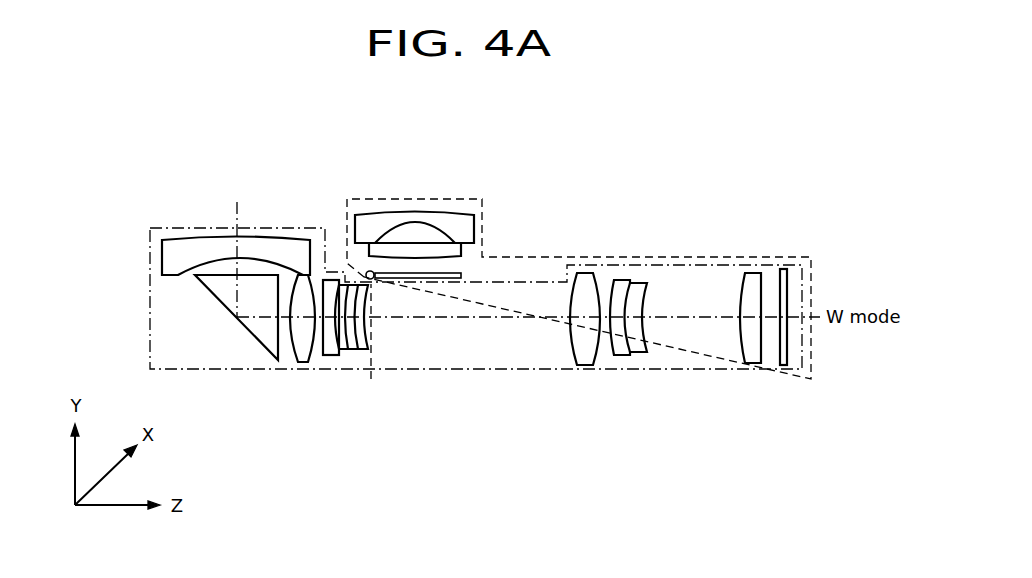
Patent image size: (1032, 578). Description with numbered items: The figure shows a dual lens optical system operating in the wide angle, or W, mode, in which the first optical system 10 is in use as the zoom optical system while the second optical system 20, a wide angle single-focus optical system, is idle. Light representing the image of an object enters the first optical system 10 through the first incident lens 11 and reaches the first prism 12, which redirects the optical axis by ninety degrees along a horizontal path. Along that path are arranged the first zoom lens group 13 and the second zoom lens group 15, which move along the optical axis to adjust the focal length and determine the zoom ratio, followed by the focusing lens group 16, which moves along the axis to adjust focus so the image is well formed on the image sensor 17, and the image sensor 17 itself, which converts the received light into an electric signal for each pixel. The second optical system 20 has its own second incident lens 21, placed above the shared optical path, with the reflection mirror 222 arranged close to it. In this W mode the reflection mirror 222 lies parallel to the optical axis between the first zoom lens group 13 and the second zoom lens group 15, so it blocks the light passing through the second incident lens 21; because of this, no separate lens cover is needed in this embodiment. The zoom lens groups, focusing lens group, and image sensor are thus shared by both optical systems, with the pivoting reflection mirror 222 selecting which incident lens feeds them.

The first optical system 10 is at (150, 283).
The first incident lens 11 is at (188, 240).
The first prism 12 is at (253, 333).
The first zoom lens group 13 is at (323, 358).
The second zoom lens group 15 is at (587, 363).
The focusing lens group 16 is at (742, 353).
The image sensor 17 is at (782, 367).
The second optical system 20 is at (610, 256).
The second incident lens 21 is at (418, 213).
The reflection mirror 222 is at (460, 272).